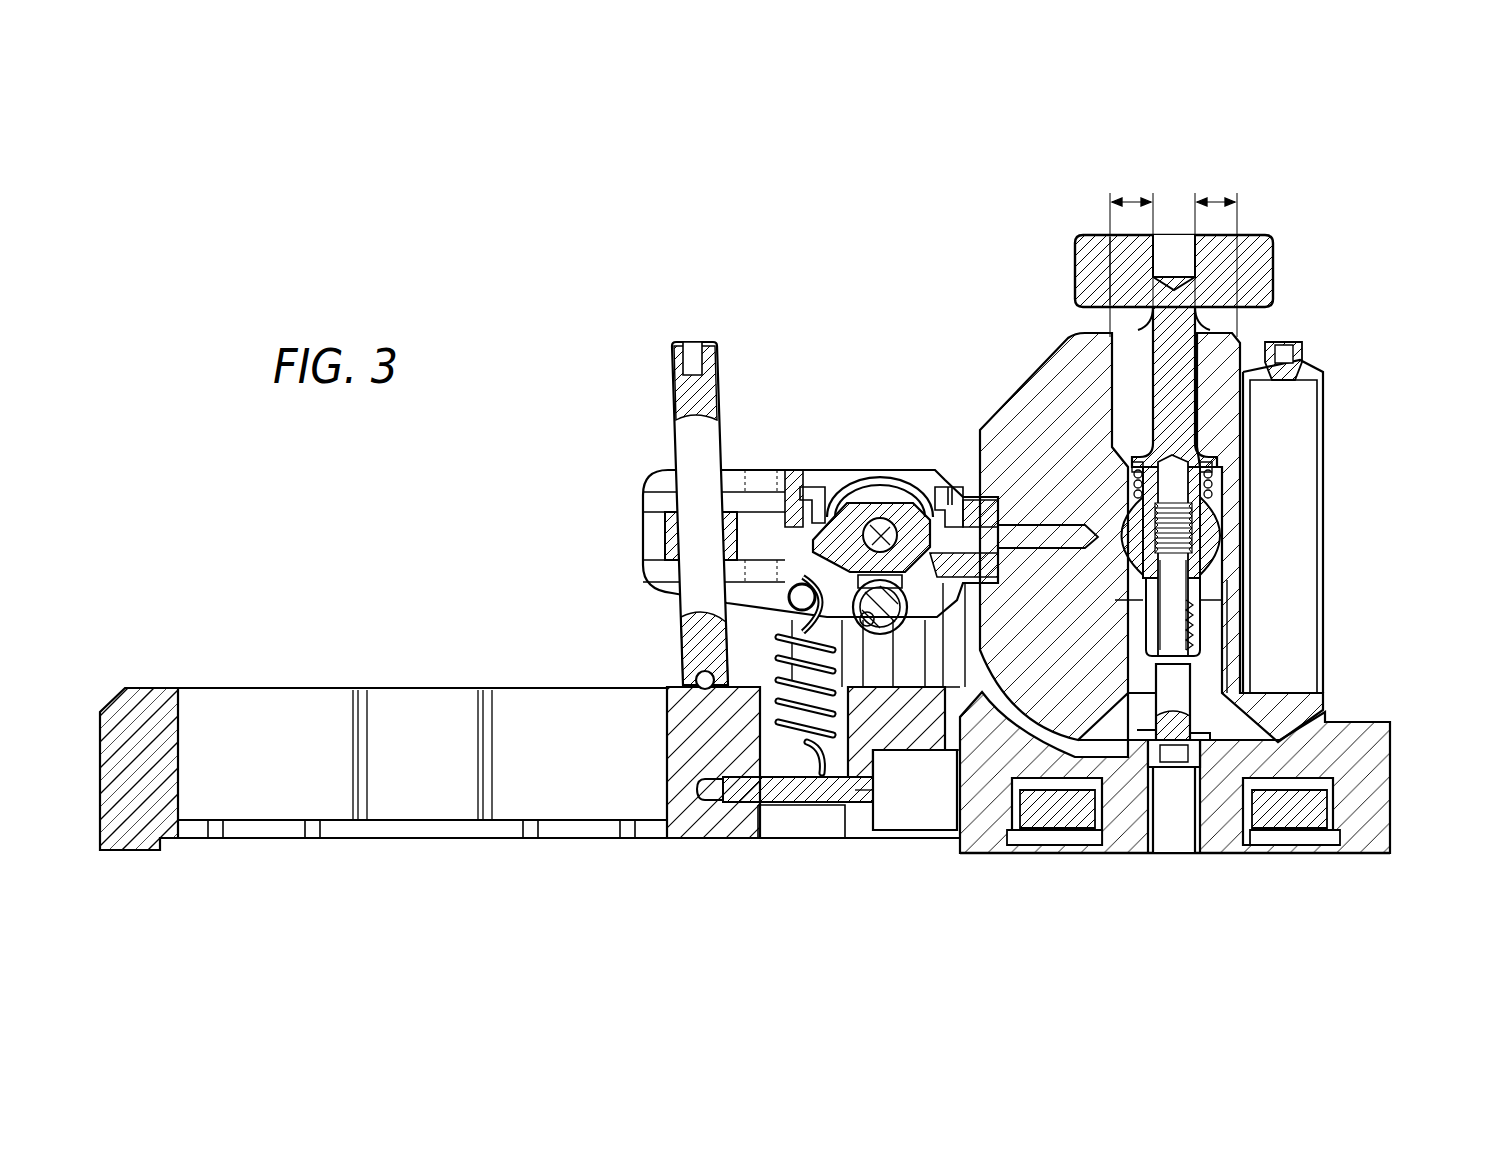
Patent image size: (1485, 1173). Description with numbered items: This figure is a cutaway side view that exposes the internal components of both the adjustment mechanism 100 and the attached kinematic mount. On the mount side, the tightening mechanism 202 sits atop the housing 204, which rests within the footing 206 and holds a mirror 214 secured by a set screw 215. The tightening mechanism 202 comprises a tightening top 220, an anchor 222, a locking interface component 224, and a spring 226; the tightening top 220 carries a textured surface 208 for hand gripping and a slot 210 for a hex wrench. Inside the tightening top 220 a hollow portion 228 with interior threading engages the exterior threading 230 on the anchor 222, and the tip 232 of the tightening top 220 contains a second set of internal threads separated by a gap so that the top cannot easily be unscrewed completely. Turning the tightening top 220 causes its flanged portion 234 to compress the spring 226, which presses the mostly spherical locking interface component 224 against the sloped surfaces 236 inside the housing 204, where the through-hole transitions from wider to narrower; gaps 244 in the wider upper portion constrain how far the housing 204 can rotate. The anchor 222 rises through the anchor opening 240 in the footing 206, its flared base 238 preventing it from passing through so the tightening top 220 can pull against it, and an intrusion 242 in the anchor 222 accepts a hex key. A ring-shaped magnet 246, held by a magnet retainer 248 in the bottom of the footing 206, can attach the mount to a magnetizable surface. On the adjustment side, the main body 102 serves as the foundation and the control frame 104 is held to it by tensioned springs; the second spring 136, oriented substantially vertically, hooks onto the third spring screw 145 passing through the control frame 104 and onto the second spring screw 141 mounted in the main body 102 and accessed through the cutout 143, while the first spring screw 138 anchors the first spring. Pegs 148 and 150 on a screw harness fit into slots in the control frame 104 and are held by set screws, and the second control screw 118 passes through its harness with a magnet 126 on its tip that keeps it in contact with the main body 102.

The adjustment mechanism 100 is at (328, 543).
The main body 102 is at (437, 705).
The control frame 104 is at (875, 478).
The second control screw 118 is at (672, 397).
The magnet 126 is at (700, 675).
The second spring 136 is at (787, 730).
The first spring screw 138 is at (880, 677).
The second spring screw 141 is at (815, 805).
The cutout 143 is at (925, 817).
The third spring screw 145 is at (800, 593).
The peg 148 is at (940, 537).
The peg 150 is at (827, 543).
The tightening mechanism 202 is at (1278, 230).
The housing 204 is at (1055, 332).
The footing 206 is at (1352, 855).
The textured surface 208 is at (1077, 268).
The slot 210 is at (1182, 245).
The mirror 214 is at (1315, 505).
The set screw 215 is at (1290, 345).
The tightening top 220 is at (1108, 233).
The anchor 222 is at (1175, 655).
The locking interface component 224 is at (1123, 520).
The spring 226 is at (1137, 483).
The hollow portion 228 is at (1185, 480).
The exterior threading 230 is at (1190, 535).
The tip 232 is at (1195, 625).
The flanged portion 234 is at (1195, 455).
The sloped surfaces 236 is at (1118, 568).
The flared base 238 is at (1190, 750).
The anchor opening 240 is at (1178, 830).
The intrusion 242 is at (1185, 765).
The gaps 244 is at (1215, 195).
The ring-shaped magnet 246 is at (1063, 830).
The magnet retainer 248 is at (1020, 835).